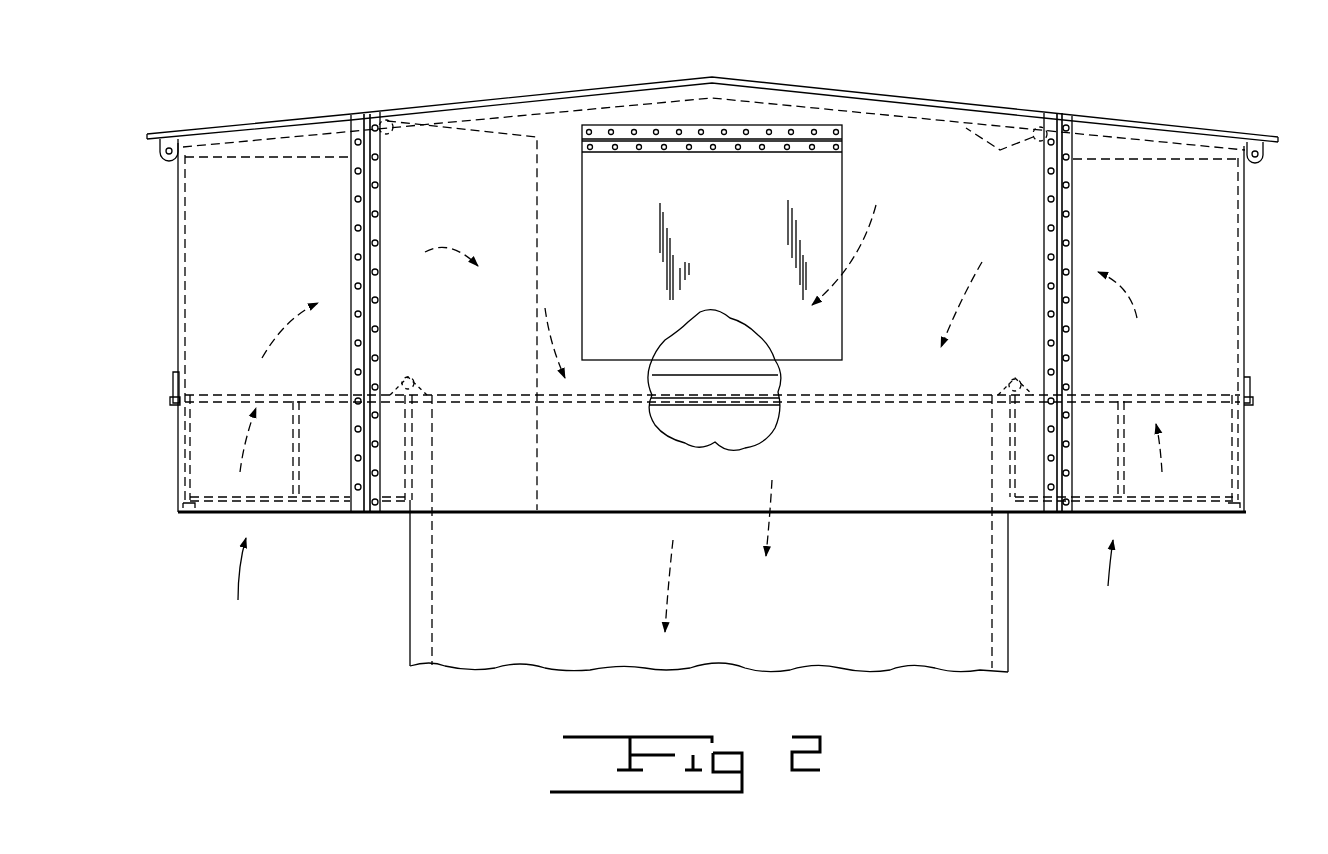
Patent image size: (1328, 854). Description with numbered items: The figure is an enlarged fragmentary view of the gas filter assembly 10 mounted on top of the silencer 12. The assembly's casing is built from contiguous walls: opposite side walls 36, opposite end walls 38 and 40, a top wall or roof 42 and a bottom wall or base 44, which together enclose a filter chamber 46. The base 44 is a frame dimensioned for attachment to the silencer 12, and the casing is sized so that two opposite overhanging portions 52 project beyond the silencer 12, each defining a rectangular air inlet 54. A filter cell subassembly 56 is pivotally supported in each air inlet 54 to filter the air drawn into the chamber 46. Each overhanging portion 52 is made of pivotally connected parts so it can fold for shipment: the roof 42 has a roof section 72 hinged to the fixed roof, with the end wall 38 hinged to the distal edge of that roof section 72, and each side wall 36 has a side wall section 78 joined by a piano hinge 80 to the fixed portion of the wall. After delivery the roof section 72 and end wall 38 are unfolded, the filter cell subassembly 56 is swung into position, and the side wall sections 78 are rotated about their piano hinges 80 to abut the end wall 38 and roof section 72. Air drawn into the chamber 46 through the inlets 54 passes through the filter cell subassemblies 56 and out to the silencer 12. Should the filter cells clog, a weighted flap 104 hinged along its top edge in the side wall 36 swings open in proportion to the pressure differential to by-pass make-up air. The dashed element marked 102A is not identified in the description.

The gas filter assembly 10 is at (424, 105).
The silencer 12 is at (1010, 630).
The side wall 36 is at (967, 128).
The end wall 38 is at (178, 250).
The end wall 40 is at (1245, 305).
The roof 42 is at (603, 92).
The base 44 is at (952, 395).
The filter chamber 46 is at (722, 355).
The overhanging portion 52 is at (228, 115).
The air inlet 54 is at (190, 516).
The filter cell subassembly 56 is at (313, 500).
The roof section 72 is at (313, 121).
The side wall section 78 is at (193, 308).
The piano hinge 80 is at (378, 220).
The filter element 102A is at (283, 175).
The flap 104 is at (833, 204).